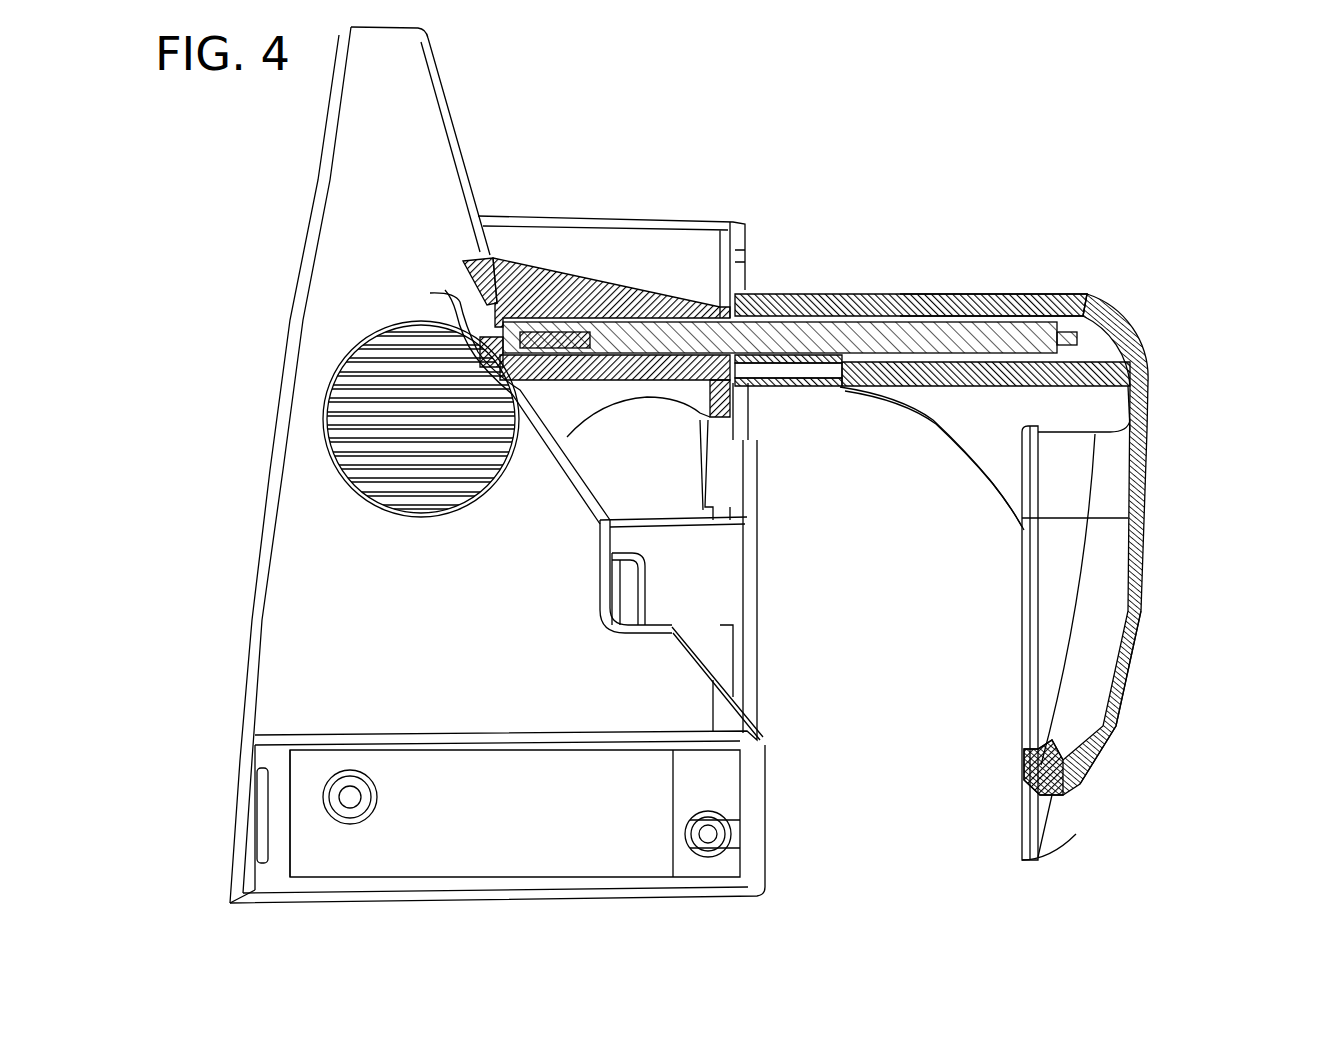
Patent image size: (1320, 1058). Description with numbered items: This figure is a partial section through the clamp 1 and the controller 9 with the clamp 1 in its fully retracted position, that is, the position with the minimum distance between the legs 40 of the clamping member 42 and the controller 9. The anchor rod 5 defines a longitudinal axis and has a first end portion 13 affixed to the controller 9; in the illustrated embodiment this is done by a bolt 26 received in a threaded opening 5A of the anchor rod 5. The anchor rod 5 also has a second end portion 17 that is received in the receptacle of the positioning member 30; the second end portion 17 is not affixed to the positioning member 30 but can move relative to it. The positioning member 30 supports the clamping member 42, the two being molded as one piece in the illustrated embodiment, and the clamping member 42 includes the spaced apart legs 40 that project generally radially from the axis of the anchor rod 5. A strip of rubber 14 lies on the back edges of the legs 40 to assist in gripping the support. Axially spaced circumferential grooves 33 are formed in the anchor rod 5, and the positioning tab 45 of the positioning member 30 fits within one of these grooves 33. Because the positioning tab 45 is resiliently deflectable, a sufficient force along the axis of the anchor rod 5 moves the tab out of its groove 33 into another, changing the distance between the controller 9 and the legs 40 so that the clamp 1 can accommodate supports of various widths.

The clamp 1 is at (1212, 416).
The anchor rod 5 is at (990, 322).
The threaded opening 5A is at (556, 332).
The controller 9 is at (621, 202).
The first end portion 13 is at (688, 297).
The strip of rubber 14 is at (1024, 773).
The second end portion 17 is at (1053, 332).
The bolt 26 is at (462, 301).
The positioning member 30 is at (870, 294).
The grooves 33 is at (812, 296).
The leg 40 is at (1075, 822).
The clamping member 42 is at (1168, 556).
The positioning tab 45 is at (755, 368).